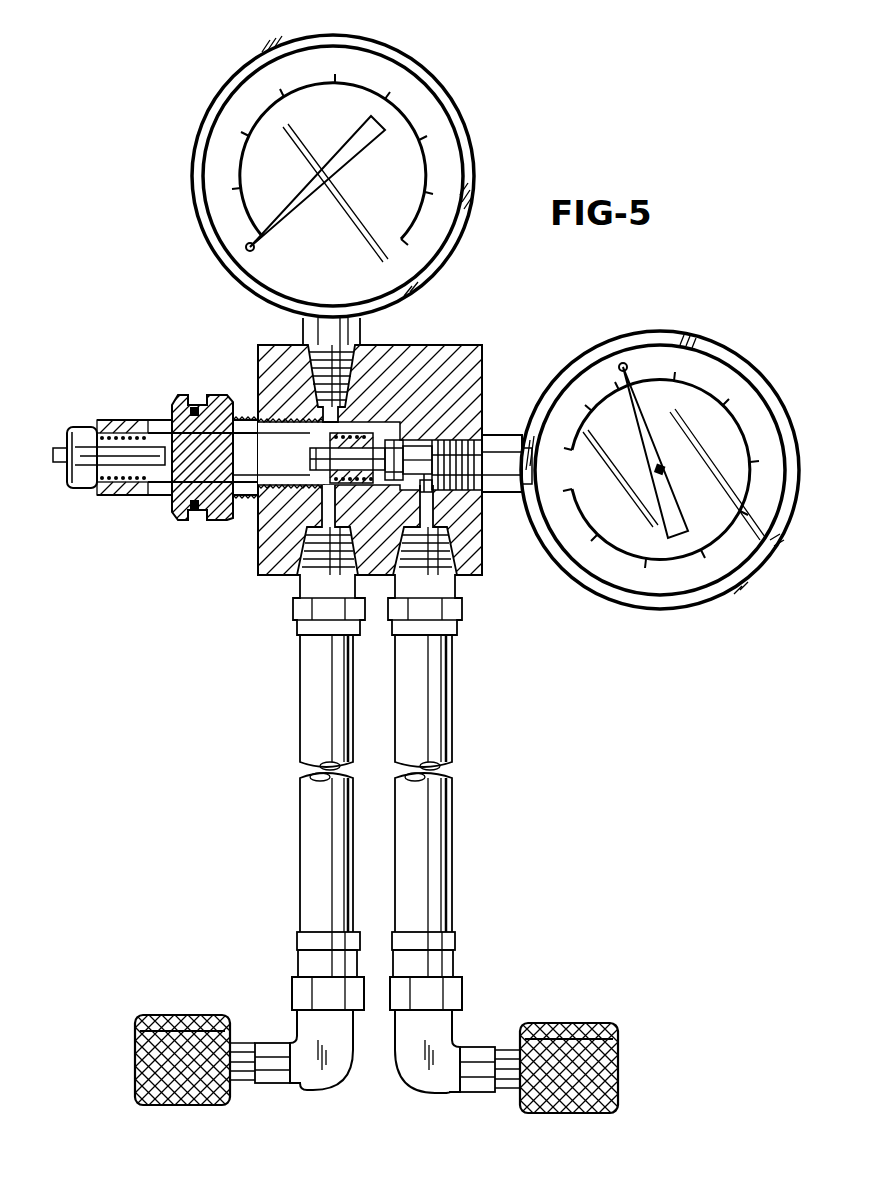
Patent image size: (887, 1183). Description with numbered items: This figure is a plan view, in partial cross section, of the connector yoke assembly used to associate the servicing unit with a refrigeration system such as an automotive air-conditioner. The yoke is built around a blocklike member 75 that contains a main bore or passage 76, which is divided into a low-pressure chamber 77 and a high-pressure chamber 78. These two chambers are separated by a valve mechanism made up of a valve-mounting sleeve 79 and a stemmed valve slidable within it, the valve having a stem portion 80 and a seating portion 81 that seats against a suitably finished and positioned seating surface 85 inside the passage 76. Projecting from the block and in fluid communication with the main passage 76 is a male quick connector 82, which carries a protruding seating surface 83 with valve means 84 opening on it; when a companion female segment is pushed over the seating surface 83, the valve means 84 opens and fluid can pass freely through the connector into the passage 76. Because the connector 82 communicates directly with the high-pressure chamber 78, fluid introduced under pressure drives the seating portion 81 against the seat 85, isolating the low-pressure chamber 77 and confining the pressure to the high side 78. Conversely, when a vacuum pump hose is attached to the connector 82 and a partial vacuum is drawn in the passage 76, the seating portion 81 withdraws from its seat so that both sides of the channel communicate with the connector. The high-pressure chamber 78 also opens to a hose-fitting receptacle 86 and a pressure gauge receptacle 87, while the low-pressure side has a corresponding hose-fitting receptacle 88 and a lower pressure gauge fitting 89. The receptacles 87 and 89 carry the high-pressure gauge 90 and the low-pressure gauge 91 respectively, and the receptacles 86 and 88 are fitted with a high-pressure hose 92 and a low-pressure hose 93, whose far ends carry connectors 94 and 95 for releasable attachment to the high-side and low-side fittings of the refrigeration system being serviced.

The blocklike member 75 is at (425, 362).
The main bore or passage 76 is at (382, 443).
The low-pressure chamber 77 is at (436, 445).
The high-pressure chamber 78 is at (314, 454).
The valve-mounting sleeve 79 is at (381, 489).
The stem portion 80 is at (305, 465).
The seating portion 81 is at (431, 490).
The male quick connector 82 is at (120, 494).
The protruding seating surface 83 is at (68, 427).
The valve means 84 is at (96, 437).
The seating surface 85 is at (418, 438).
The hose-fitting receptacle 86 is at (303, 566).
The pressure gauge receptacle 87 is at (322, 349).
The hose-fitting receptacle 88 is at (451, 568).
The lower pressure gauge fitting 89 is at (503, 435).
The high-pressure gauge 90 is at (203, 131).
The low-pressure gauge 91 is at (662, 334).
The high-pressure hose 92 is at (300, 772).
The low-pressure hose 93 is at (452, 768).
The connector 94 is at (178, 1016).
The connector 95 is at (577, 1023).